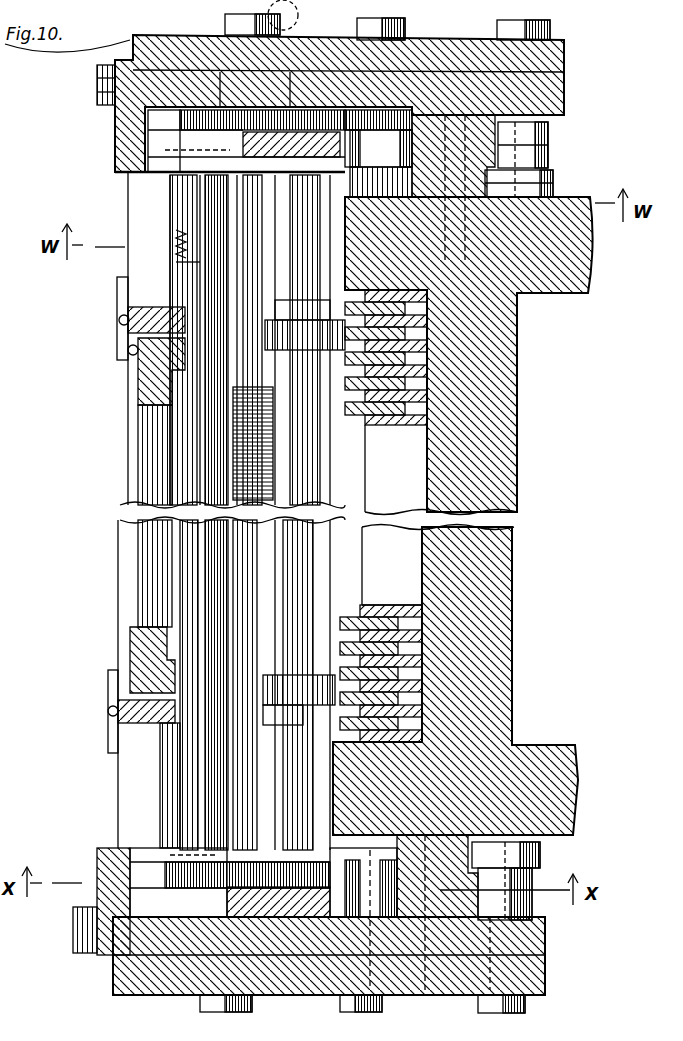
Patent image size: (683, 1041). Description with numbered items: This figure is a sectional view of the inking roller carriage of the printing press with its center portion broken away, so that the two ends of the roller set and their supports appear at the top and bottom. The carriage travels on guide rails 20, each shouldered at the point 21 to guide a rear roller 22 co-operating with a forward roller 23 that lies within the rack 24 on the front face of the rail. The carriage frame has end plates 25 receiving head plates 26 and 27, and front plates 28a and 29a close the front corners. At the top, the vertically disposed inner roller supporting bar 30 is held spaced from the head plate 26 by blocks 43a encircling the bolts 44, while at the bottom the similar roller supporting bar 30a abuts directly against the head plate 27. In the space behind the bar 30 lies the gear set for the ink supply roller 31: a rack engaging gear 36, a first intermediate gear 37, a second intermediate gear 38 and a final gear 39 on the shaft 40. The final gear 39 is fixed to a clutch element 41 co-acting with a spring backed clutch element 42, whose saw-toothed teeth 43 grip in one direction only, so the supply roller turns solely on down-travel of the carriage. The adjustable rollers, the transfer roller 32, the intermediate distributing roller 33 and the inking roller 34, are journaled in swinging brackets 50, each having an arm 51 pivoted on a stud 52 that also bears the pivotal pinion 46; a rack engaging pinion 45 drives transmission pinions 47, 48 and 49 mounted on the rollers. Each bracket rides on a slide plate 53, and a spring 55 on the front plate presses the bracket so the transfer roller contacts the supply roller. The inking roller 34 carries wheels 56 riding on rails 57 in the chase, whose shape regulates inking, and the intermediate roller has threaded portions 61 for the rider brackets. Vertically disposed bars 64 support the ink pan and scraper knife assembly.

The guide rails 20 is at (510, 142).
The shoulder point 21 is at (500, 158).
The rear roller 22 is at (553, 182).
The forward roller 23 is at (420, 150).
The rack 24 is at (430, 180).
The end plates 25 is at (300, 100).
The head plate 26 is at (160, 75).
The head plate 27 is at (305, 930).
The front plate 28a is at (125, 147).
The front plate 29a is at (80, 912).
The inner roller supporting bar 30 is at (215, 178).
The roller supporting bar 30a is at (240, 880).
The ink supply roller 31 is at (140, 258).
The transfer roller 32 is at (200, 290).
The intermediate distributing roller 33 is at (250, 230).
The inking roller 34 is at (310, 265).
The rack engaging gear 36 is at (400, 160).
The first intermediate gear 37 is at (390, 130).
The second intermediate gear 38 is at (235, 105).
The final gear 39 is at (185, 117).
The shaft 40 is at (176, 262).
The clutch element 41 is at (172, 185).
The spring backed clutch element 42 is at (176, 236).
The teeth 43 is at (180, 190).
The blocks 43a is at (330, 150).
The bolts 44 is at (283, 15).
The rack engaging pinion 45 is at (433, 863).
The pivotal pinion 46 is at (333, 835).
The first transmission pinion 47 is at (383, 881).
The second transmission pinion 48 is at (240, 870).
The third transmission pinion 49 is at (190, 875).
The swinging brackets 50 is at (270, 205).
The arm 51 is at (340, 175).
The stud 52 is at (328, 830).
The slide plate 53 is at (148, 880).
The spring 55 is at (150, 162).
The wheels 56 is at (295, 710).
The rails 57 is at (405, 300).
The threaded portions 61 is at (275, 432).
The vertically disposed bars 64 is at (135, 650).